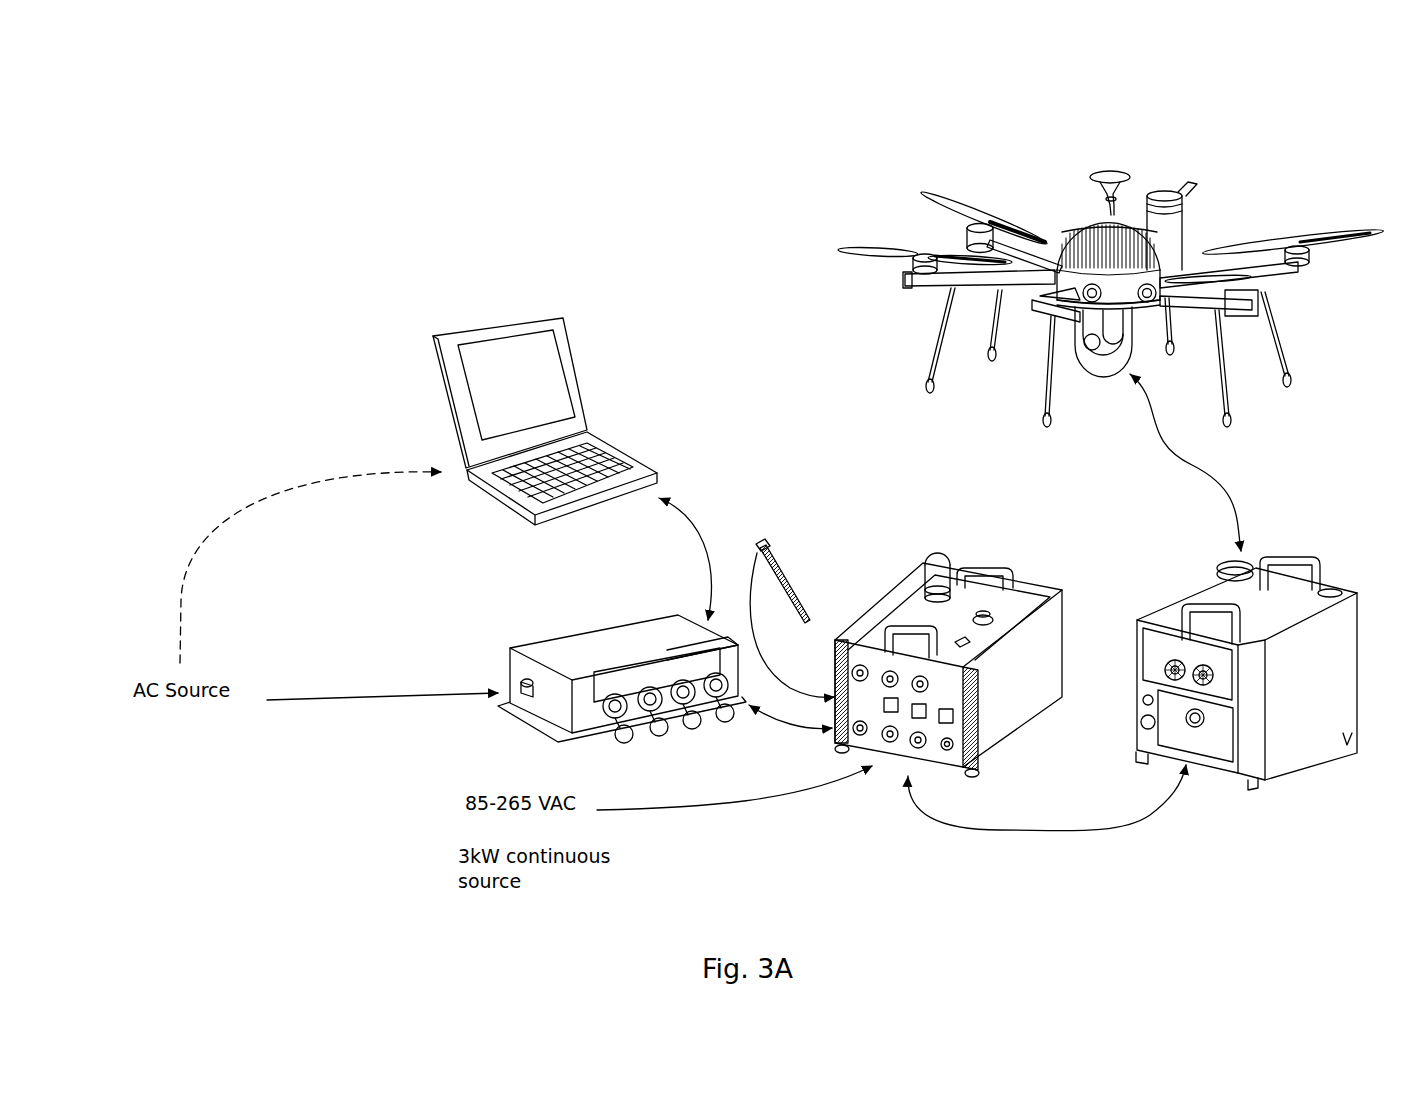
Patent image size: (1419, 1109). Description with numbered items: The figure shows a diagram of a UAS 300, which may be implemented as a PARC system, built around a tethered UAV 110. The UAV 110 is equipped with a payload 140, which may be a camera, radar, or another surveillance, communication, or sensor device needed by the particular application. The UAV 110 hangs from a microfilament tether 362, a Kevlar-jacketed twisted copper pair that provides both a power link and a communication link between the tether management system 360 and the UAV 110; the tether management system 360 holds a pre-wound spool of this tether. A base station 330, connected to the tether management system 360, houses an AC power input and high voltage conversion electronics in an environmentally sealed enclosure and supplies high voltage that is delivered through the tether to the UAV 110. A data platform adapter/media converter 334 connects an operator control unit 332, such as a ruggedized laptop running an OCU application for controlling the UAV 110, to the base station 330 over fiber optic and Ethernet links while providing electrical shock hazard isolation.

The UAS 300 is at (185, 138).
The tethered UAV 110 is at (760, 175).
The payload 140 is at (1094, 367).
The operator control unit (OCU) 332 is at (388, 358).
The data platform adapter/media converter (DPA/MC) 334 is at (605, 607).
The base station 330 is at (1058, 857).
The tether management system 360 is at (1337, 788).
The tether 362 is at (1221, 487).